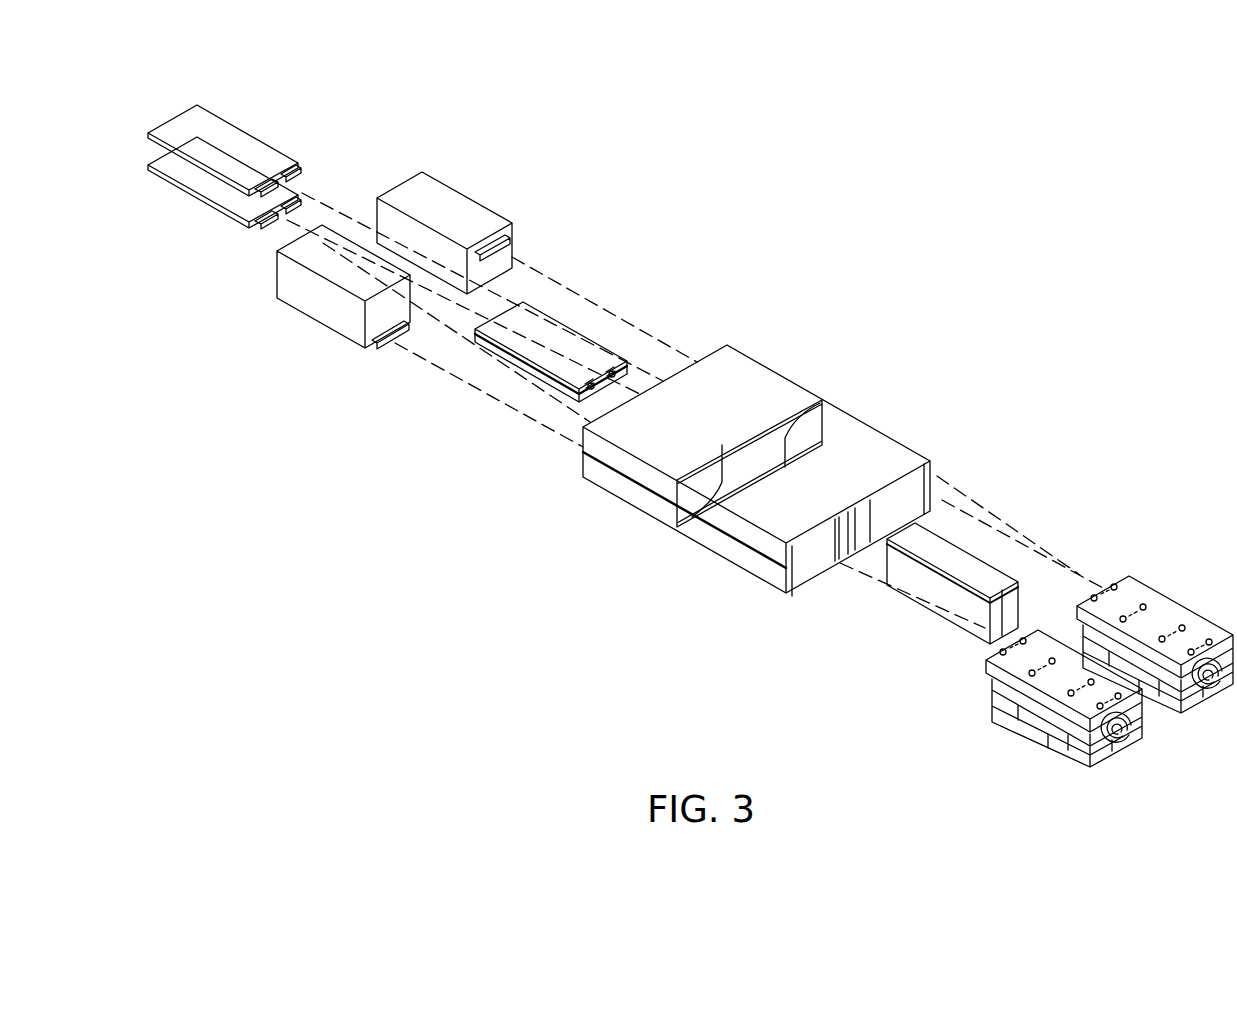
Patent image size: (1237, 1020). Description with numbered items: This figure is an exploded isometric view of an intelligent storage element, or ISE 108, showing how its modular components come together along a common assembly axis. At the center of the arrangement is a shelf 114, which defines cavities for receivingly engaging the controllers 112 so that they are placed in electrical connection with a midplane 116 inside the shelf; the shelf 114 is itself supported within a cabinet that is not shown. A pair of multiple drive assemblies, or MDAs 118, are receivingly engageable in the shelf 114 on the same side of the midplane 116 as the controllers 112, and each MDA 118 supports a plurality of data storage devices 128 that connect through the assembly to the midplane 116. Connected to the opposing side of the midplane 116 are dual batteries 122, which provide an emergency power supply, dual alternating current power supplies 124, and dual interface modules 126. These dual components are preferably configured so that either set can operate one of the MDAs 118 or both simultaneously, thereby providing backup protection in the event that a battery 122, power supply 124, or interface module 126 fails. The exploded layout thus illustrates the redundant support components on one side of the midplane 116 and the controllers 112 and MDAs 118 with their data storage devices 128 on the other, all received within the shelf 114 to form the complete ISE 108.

The intelligent storage element 108 is at (795, 215).
The controller 112 is at (980, 565).
The shelf 114 is at (737, 468).
The midplane 116 is at (757, 447).
The multiple drive assembly 118 is at (1073, 646).
The battery 122 is at (543, 323).
The alternating current power supply 124 is at (440, 207).
The interface module 126 is at (250, 153).
The data storage device 128 is at (990, 697).